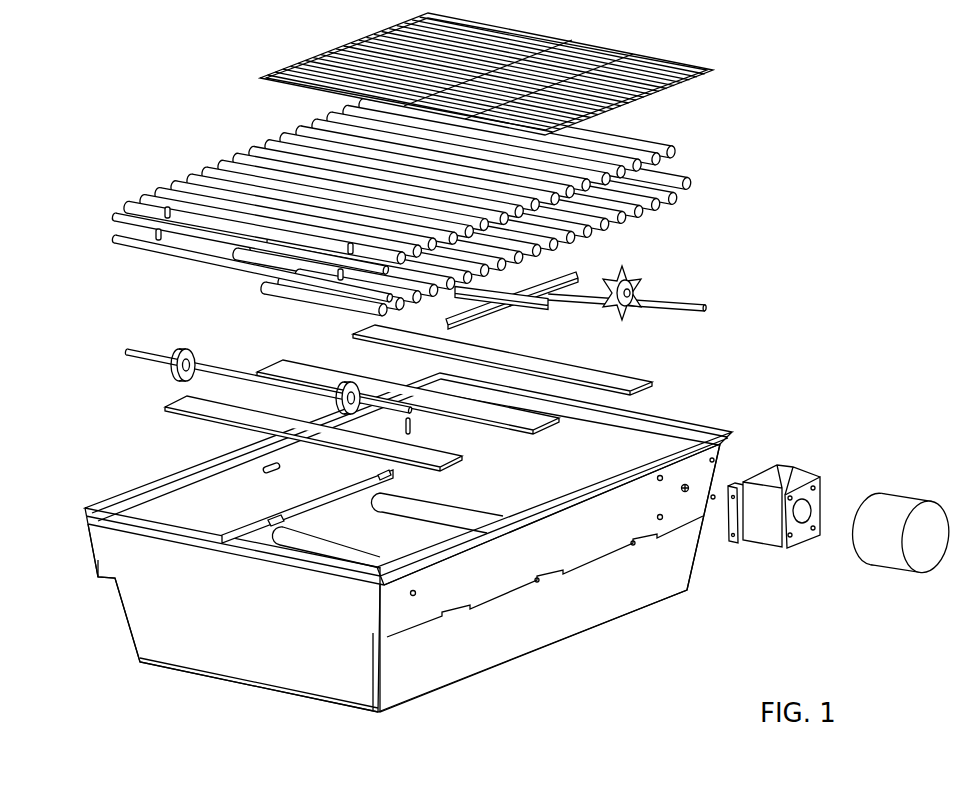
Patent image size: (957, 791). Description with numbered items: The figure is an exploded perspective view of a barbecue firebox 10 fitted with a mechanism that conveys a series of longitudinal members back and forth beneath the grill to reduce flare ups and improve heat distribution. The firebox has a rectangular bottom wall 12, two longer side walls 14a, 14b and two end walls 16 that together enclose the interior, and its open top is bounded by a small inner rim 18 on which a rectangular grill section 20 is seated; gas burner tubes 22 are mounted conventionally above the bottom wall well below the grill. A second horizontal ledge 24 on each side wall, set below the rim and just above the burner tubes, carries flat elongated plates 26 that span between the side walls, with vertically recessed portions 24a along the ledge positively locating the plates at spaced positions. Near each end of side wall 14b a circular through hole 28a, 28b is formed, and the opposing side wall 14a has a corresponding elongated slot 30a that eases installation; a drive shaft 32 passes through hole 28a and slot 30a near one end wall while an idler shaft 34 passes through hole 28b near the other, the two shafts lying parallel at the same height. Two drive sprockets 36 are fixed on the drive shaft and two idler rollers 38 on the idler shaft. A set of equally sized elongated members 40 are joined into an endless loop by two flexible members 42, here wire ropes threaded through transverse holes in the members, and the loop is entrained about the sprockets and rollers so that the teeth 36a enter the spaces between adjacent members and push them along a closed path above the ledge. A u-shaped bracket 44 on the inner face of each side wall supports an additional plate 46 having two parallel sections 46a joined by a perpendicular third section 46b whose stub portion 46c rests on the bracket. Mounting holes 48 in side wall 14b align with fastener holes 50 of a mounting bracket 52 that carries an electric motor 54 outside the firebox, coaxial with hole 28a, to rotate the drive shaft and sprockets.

The firebox 10 is at (66, 482).
The bottom wall 12 is at (243, 683).
The side wall 14a is at (150, 515).
The side wall 14b is at (560, 617).
The end wall 16 is at (148, 608).
The inner rim 18 is at (200, 477).
The grill section 20 is at (714, 82).
The gas burner tubes 22 is at (380, 557).
The horizontal ledge 24 is at (233, 528).
The vertically recessed portions 24a is at (274, 517).
The bars or plates 26 is at (497, 408).
The circular through hole 28a is at (689, 488).
The circular through hole 28b is at (418, 593).
The elongated slot 30a is at (382, 476).
The drive shaft 32 is at (695, 303).
The idler shaft 34 is at (235, 368).
The drive sprockets 36 is at (650, 274).
The teeth 36a is at (618, 268).
The idler rollers 38 is at (182, 349).
The elongated members 40 is at (273, 142).
The flexible members 42 is at (153, 233).
The u-shaped bracket 44 is at (266, 466).
The additional bar or plate 46 is at (519, 295).
The parallel sections 46a is at (562, 279).
The third section 46b is at (463, 298).
The stub portion 46c is at (548, 301).
The mounting holes 48 is at (657, 516).
The fastener holes 50 is at (736, 498).
The mounting bracket 52 is at (770, 527).
The electric motor 54 is at (893, 503).